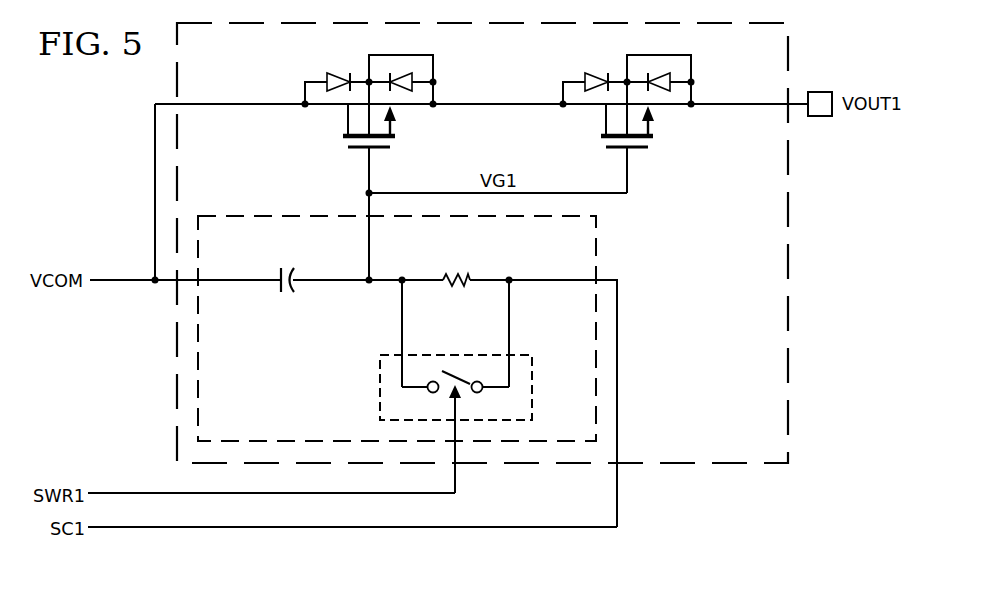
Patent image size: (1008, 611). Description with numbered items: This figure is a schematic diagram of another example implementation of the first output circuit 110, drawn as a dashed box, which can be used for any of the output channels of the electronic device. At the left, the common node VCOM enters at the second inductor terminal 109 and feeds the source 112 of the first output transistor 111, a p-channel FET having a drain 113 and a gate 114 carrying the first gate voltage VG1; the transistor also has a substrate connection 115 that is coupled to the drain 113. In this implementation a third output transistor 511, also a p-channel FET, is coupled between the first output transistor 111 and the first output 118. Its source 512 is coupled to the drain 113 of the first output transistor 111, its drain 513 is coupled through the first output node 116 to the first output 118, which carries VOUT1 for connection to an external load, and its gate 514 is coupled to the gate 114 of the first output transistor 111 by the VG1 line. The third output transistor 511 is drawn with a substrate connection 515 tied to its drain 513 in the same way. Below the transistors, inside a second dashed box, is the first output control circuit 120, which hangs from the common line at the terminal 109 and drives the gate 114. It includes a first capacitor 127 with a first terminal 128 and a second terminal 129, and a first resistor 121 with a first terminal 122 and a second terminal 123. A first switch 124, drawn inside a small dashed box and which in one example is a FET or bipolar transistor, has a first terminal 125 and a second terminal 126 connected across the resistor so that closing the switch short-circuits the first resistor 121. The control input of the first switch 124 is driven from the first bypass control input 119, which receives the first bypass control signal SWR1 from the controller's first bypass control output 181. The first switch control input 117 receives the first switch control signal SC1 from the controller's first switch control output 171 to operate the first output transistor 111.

The second inductor terminal 109 is at (124, 279).
The first output circuit 110 is at (792, 294).
The first output transistor 111 is at (357, 148).
The source 112 is at (294, 102).
The drain 113 is at (443, 107).
The gate 114 is at (372, 152).
The substrate connection 115 is at (368, 62).
The first output node 116 is at (740, 101).
The first switch control input 117 is at (618, 403).
The first output 118 is at (822, 91).
The first bypass control input 119 is at (456, 478).
The first output control circuit 120 is at (280, 211).
The first resistor 121 is at (455, 287).
The first terminal 122 is at (480, 279).
The second terminal 123 is at (432, 279).
The first switch 124 is at (379, 393).
The first terminal 125 is at (511, 318).
The second terminal 126 is at (401, 318).
The first capacitor 127 is at (286, 293).
The first terminal 128 is at (300, 278).
The second terminal 129 is at (268, 278).
The first switch control output 171 is at (122, 528).
The first bypass control output 181 is at (122, 492).
The third output transistor 511 is at (637, 149).
The source 512 is at (553, 102).
The drain 513 is at (701, 107).
The gate 514 is at (625, 152).
The substrate connection 515 is at (626, 62).